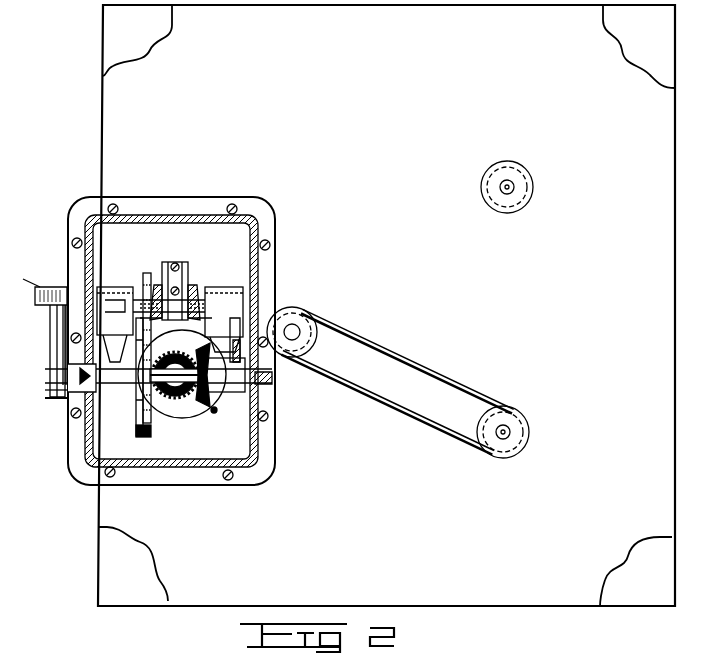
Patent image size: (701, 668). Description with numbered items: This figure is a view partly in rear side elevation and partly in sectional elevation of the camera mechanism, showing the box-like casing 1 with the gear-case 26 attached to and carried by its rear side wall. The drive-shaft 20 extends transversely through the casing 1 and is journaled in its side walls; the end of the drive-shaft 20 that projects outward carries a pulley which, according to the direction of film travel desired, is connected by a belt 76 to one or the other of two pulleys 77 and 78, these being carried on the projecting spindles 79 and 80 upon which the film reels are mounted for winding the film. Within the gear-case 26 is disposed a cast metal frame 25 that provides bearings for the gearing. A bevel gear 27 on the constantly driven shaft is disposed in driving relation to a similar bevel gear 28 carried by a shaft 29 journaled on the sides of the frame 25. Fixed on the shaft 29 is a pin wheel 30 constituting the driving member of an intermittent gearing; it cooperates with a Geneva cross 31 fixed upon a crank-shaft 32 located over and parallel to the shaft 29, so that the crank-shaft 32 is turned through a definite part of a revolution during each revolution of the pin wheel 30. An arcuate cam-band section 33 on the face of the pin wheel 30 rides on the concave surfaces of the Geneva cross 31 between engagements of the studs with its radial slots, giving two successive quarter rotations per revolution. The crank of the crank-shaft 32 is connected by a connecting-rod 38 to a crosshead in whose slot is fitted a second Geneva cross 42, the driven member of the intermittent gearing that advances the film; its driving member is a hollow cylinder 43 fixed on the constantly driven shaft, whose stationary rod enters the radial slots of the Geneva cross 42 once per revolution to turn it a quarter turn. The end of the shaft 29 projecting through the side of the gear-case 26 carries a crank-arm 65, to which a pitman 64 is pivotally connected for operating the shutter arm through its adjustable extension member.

The box-like casing 1 is at (112, 109).
The drive-shaft 20 is at (297, 330).
The cast metal frame 25 is at (240, 325).
The gear-case 26 is at (165, 219).
The bevel gear 27 is at (173, 404).
The bevel gear 28 is at (205, 410).
The shaft 29 is at (140, 407).
The pin wheel 30 is at (150, 381).
The Geneva cross 31 is at (147, 289).
The crank-shaft 32 is at (193, 283).
The arcuate cam-band section 33 is at (143, 424).
The connecting-rod 38 is at (180, 261).
The Geneva cross 42 is at (158, 278).
The hollow cylinder 43 is at (191, 413).
The pitman 64 is at (50, 323).
The crank-arm 65 is at (56, 341).
The belt 76 is at (414, 363).
The pulley 77 is at (533, 190).
The pulley 78 is at (530, 437).
The spindle 79 is at (507, 187).
The spindle 80 is at (503, 432).